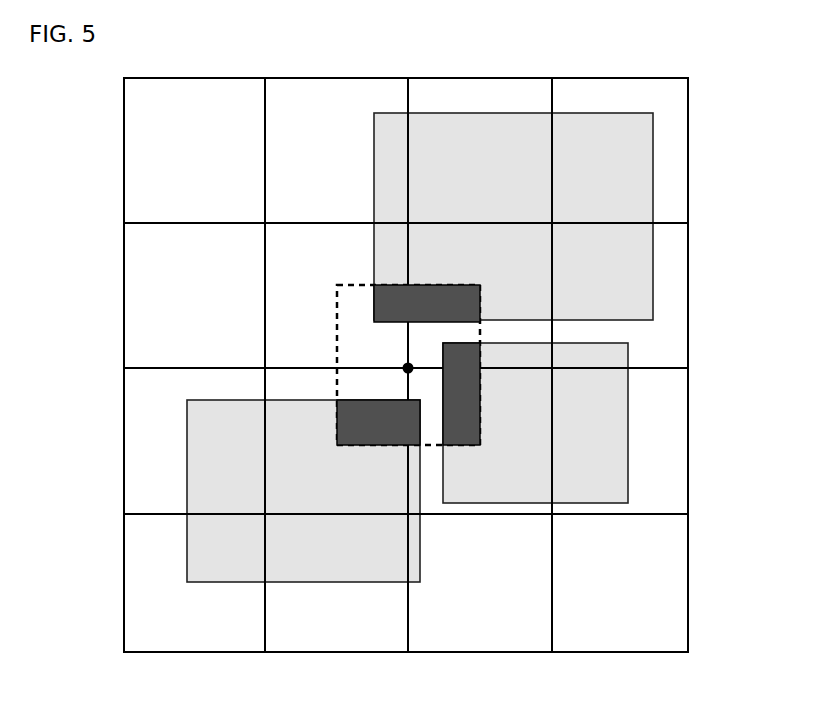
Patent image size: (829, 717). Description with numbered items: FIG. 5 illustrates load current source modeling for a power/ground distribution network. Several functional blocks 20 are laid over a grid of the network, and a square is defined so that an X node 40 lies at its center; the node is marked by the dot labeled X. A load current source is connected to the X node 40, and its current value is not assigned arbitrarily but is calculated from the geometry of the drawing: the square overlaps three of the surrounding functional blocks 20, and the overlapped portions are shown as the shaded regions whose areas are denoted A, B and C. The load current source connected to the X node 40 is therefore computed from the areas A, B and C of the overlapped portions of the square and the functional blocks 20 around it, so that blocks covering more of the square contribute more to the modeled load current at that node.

The functional block 20 is at (633, 289).
The X node 40 is at (408, 368).
The area of overlapped portion A is at (427, 303).
The area of overlapped portion B is at (378, 422).
The area of overlapped portion C is at (461, 394).
The X node X is at (422, 360).